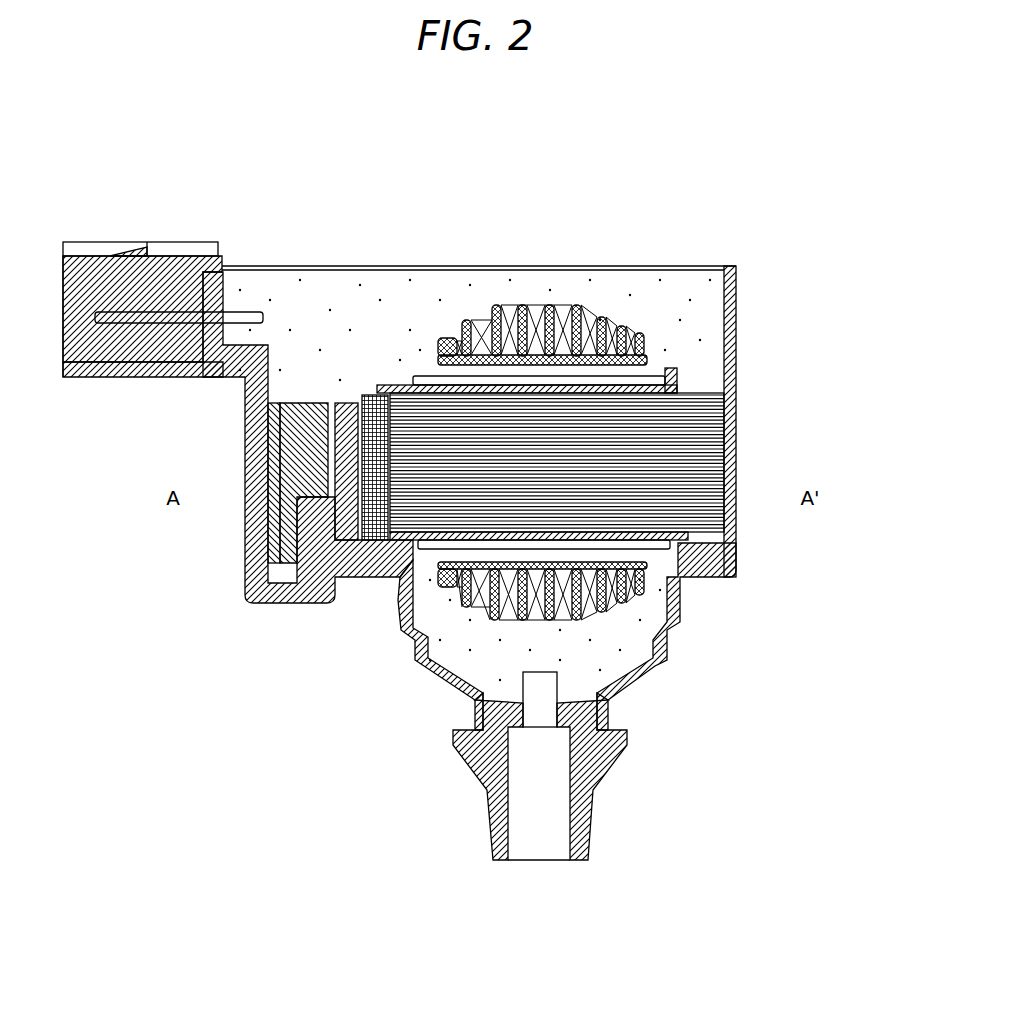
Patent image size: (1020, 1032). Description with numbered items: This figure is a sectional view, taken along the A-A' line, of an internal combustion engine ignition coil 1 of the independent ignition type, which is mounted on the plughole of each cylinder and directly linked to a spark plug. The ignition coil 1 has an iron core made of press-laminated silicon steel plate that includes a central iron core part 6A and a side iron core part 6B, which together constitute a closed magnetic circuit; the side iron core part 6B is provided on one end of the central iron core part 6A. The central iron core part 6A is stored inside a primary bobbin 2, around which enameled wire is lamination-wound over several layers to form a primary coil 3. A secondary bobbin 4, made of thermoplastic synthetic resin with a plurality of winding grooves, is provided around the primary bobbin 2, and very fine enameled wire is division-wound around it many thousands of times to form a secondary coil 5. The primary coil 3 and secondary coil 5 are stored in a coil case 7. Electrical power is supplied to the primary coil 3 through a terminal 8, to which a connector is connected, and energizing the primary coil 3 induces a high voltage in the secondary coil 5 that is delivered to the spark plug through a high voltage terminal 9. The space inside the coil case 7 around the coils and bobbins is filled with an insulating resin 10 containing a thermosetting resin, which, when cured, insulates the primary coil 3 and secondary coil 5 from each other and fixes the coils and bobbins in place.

The internal combustion engine ignition coil 1 is at (643, 243).
The primary bobbin 2 is at (413, 378).
The primary coil 3 is at (660, 370).
The secondary bobbin 4 is at (497, 310).
The secondary coil 5 is at (565, 315).
The central iron core part 6A is at (690, 440).
The side iron core part 6B is at (377, 440).
The coil case 7 is at (322, 565).
The terminal 8 is at (166, 315).
The high voltage terminal 9 is at (543, 695).
The insulating resin 10 is at (630, 632).